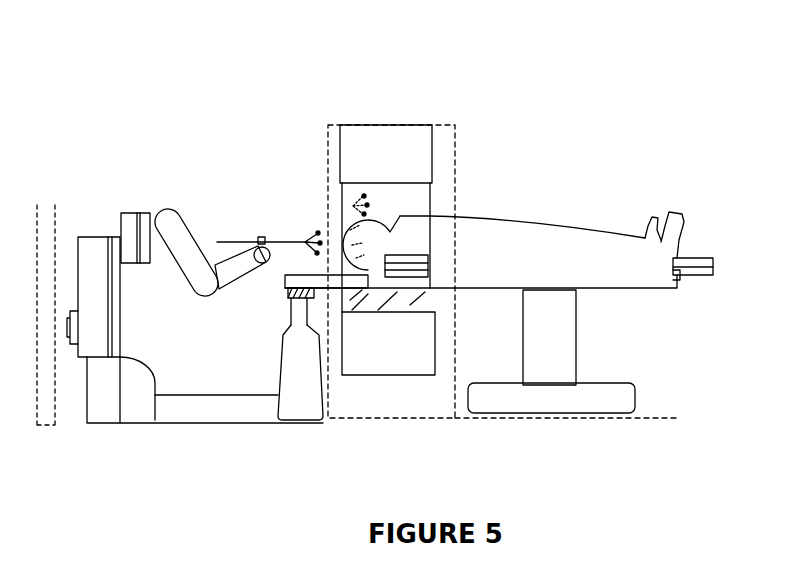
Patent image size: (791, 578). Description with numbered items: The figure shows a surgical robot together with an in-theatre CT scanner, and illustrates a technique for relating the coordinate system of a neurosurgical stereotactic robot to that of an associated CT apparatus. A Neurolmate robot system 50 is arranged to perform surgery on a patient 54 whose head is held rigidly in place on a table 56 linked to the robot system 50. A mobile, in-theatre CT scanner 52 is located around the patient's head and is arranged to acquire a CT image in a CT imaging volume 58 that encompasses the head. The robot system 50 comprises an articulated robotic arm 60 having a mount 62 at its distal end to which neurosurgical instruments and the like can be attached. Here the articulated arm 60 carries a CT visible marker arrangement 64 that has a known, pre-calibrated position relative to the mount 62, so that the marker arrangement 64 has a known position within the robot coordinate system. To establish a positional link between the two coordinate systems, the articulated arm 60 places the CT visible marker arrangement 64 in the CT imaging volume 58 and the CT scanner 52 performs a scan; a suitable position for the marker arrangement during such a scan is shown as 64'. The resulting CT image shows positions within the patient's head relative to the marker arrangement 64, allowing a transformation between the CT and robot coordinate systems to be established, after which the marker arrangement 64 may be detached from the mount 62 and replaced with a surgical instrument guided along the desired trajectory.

The robot system 50 is at (120, 465).
The CT apparatus 52 is at (473, 122).
The patient 54 is at (541, 227).
The table 56 is at (292, 298).
The CT imaging volume 58 is at (431, 204).
The articulated robotic arm 60 is at (199, 235).
The mount 62 is at (270, 232).
The CT visible marker arrangement 64 is at (315, 216).
The position of CT visible marker arrangement 64' is at (391, 122).